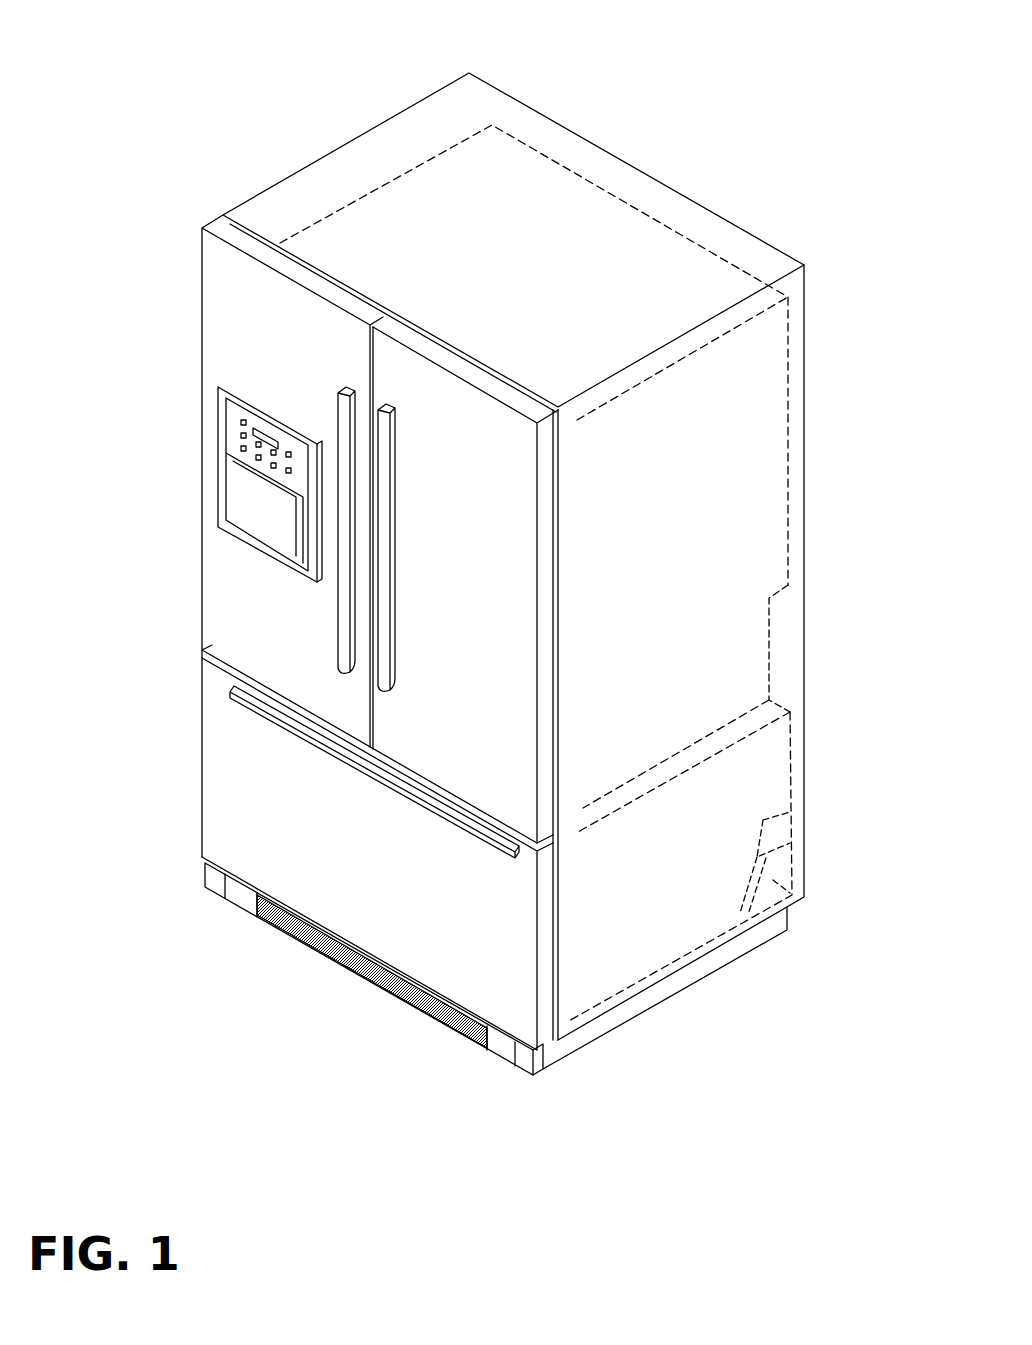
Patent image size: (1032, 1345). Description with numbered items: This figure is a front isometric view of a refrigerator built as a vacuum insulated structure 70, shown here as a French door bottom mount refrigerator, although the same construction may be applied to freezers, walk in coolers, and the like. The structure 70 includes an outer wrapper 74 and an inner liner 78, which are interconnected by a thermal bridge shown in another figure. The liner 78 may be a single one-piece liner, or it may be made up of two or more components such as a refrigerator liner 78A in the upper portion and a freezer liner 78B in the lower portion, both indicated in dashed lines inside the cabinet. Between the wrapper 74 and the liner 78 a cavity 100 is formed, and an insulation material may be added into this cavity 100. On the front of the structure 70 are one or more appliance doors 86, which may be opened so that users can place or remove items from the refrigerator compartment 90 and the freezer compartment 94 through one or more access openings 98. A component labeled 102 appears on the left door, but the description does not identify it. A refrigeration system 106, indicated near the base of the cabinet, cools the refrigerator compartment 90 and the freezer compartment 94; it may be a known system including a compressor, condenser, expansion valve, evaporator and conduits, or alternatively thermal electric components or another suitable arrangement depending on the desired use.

The vacuum insulated structure 70 is at (280, 114).
The wrapper 74 is at (730, 222).
The liner 78 is at (793, 767).
The refrigerator liner 78A is at (790, 443).
The freezer liner 78B is at (760, 856).
The appliance doors 86 is at (231, 598).
The refrigerator compartment 90 is at (712, 422).
The freezer compartment 94 is at (709, 813).
The access openings 98 is at (251, 237).
The cavity 100 is at (790, 614).
The dispenser 102 is at (229, 470).
The refrigeration system 106 is at (808, 900).